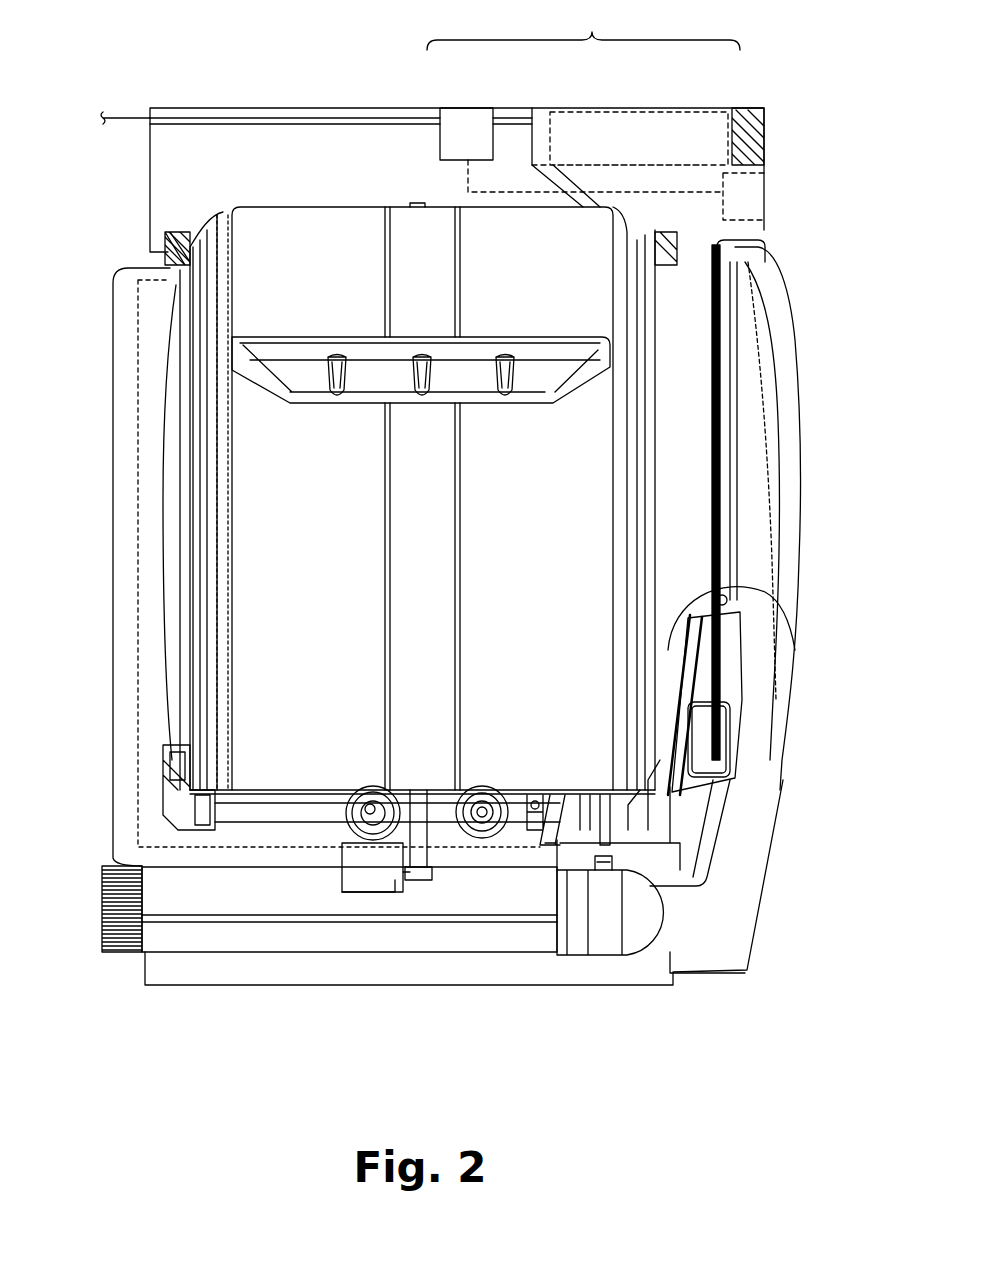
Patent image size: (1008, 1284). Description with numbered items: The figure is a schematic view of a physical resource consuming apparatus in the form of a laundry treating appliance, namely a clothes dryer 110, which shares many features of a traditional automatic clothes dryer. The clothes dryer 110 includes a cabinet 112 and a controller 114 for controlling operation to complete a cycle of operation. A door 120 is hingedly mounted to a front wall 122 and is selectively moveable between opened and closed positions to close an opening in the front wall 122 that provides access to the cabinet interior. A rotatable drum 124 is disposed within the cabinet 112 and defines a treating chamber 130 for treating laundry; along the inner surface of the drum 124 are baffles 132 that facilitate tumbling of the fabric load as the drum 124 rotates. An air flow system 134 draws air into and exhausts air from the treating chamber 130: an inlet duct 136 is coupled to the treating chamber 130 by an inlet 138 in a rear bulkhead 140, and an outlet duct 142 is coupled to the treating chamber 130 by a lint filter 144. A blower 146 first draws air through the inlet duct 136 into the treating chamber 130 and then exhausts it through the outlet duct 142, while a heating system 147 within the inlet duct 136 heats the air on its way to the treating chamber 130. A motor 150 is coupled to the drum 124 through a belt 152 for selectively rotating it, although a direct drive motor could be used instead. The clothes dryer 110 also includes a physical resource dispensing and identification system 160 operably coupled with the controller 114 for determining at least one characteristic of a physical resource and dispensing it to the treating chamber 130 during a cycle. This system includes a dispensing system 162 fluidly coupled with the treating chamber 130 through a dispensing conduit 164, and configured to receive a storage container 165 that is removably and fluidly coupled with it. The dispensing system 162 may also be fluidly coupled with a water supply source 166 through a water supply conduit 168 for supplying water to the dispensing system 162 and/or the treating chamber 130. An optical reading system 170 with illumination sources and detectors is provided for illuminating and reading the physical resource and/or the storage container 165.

The clothes dryer 110 is at (818, 62).
The cabinet 112 is at (190, 107).
The controller 114 is at (764, 228).
The door 120 is at (795, 448).
The front wall 122 is at (778, 845).
The rotatable drum 124 is at (290, 207).
The treating chamber 130 is at (278, 530).
The baffles 132 is at (560, 373).
The air flow system 134 is at (128, 704).
The inlet duct 136 is at (138, 648).
The inlet 138 is at (173, 443).
The rear bulkhead 140 is at (165, 268).
The outlet duct 142 is at (350, 935).
The lint filter 144 is at (720, 600).
The blower 146 is at (650, 918).
The heating system 147 is at (345, 823).
The motor 150 is at (420, 830).
The belt 152 is at (522, 830).
The physical resource dispensing and identification system 160 is at (583, 28).
The dispensing system 162 is at (532, 125).
The dispensing conduit 164 is at (745, 140).
The storage container 165 is at (612, 110).
The water supply source 166 is at (150, 115).
The water supply conduit 168 is at (237, 123).
The optical reading system 170 is at (470, 125).